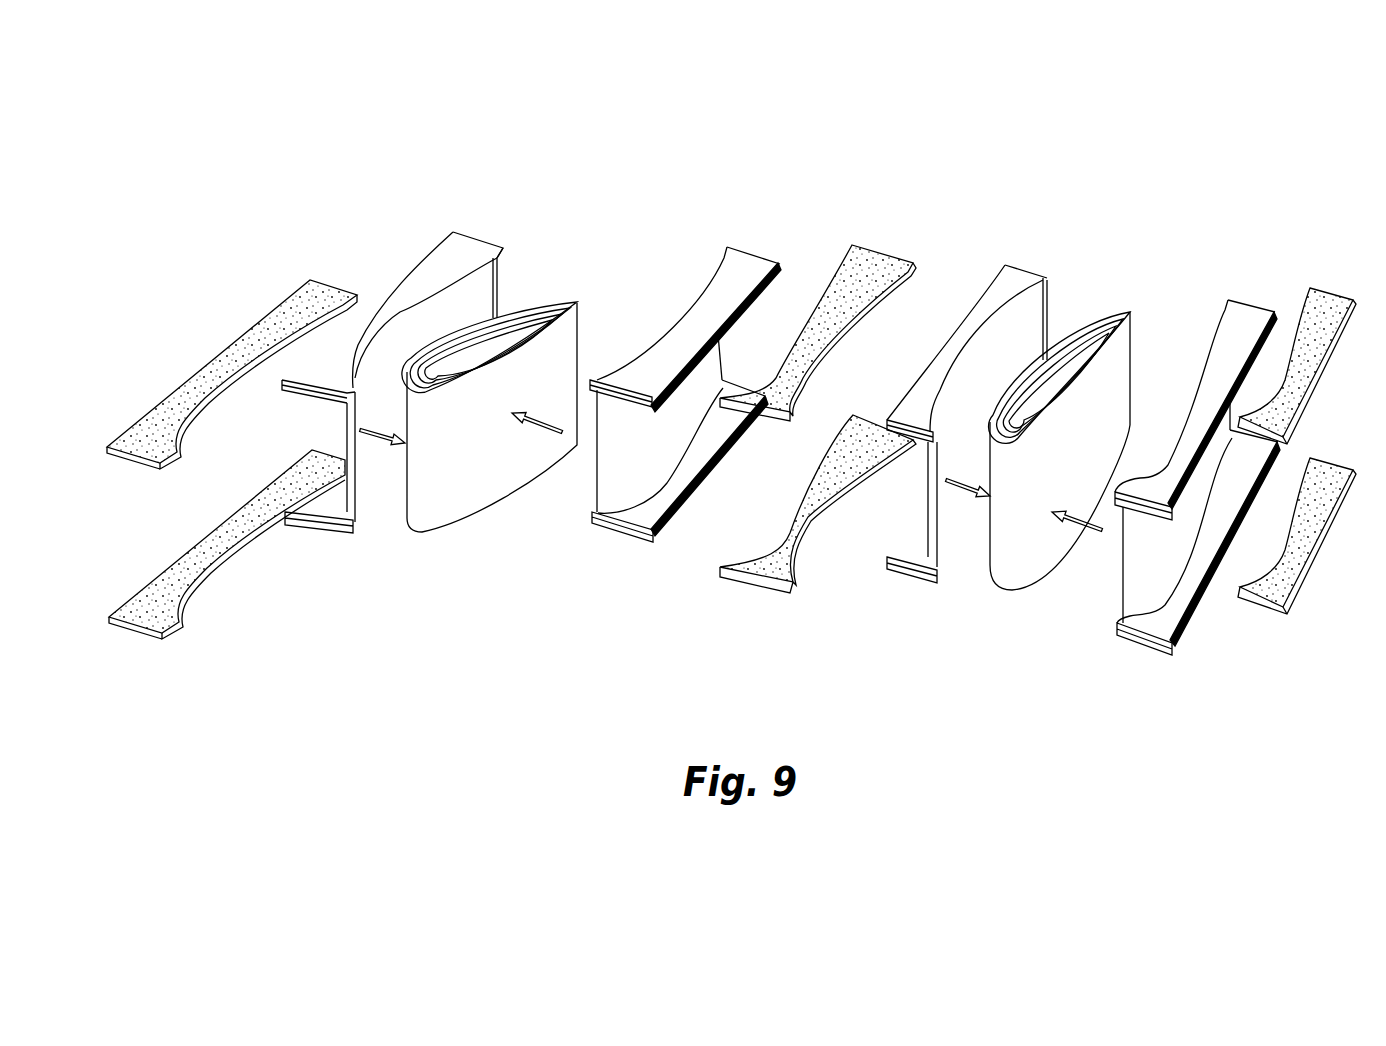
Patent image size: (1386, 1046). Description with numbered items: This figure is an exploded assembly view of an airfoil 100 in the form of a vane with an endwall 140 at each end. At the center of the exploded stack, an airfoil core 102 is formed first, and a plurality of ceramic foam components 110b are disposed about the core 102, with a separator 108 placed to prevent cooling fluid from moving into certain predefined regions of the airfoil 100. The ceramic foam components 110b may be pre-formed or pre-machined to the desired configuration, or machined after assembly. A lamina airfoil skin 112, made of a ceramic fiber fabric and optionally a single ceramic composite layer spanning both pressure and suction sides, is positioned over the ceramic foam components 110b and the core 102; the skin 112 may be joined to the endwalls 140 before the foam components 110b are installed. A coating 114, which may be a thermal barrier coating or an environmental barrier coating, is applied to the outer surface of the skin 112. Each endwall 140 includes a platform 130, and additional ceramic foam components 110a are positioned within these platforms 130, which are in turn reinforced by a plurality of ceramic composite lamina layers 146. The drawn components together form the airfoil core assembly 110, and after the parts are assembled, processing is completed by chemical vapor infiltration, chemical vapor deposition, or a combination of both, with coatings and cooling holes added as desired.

The airfoil 100 is at (211, 317).
The endwall 140 is at (1071, 230).
The airfoil core 110 is at (653, 704).
The ceramic foam components 110a is at (325, 286).
The ceramic foam components 110b is at (462, 482).
The platform 130 is at (468, 238).
The coating 114 is at (635, 467).
The lamina airfoil skin 112 is at (405, 447).
The ceramic composite lamina layers 146 is at (305, 522).
The separator 108 is at (504, 249).
The airfoil core 102 is at (462, 354).